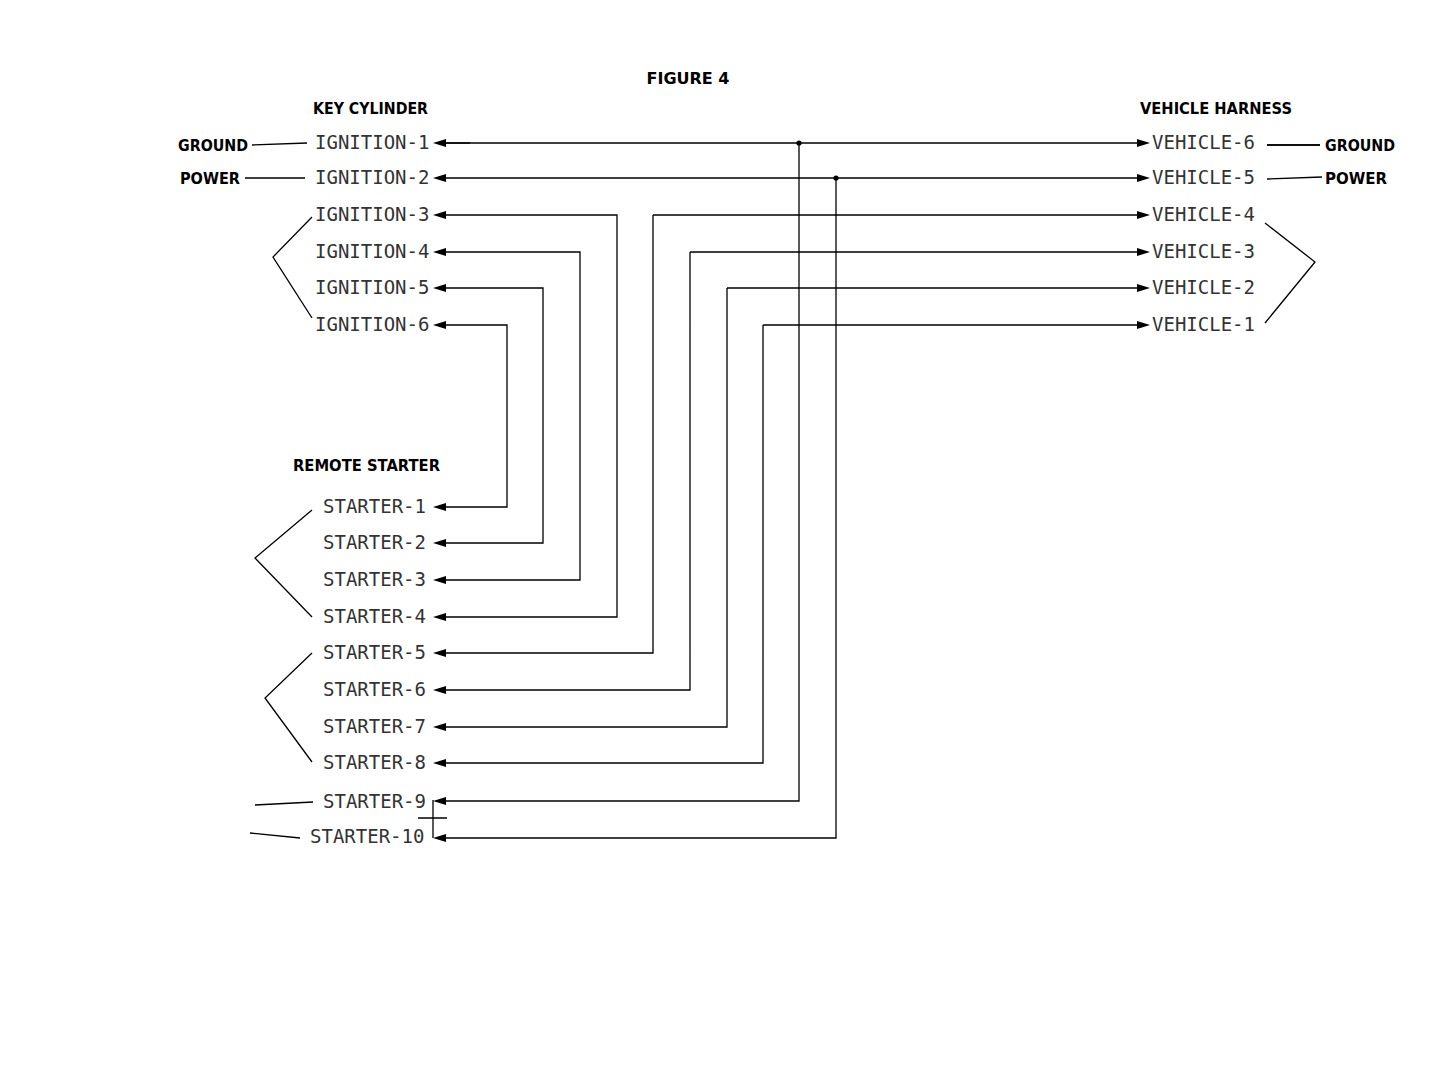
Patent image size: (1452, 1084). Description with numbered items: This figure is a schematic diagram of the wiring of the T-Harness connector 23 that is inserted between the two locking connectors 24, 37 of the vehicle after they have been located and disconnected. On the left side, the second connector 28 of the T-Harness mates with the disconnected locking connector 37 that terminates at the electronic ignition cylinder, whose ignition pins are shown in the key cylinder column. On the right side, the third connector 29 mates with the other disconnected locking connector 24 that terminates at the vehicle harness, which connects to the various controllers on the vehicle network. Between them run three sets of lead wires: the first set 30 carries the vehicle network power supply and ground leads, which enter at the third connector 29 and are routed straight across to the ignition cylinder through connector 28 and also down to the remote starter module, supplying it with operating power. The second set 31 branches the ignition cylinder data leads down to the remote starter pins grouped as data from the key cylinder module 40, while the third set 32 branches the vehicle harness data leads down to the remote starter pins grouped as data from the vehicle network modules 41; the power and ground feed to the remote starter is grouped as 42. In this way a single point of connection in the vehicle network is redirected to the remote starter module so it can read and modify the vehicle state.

The T-Harness connector 23 is at (880, 392).
The locking connector 24 is at (1220, 346).
The second connector 28 is at (438, 150).
The third connector 29 is at (1126, 326).
The first set of lead wires 30 is at (610, 138).
The second set of lead wires 31 is at (490, 437).
The third set of lead wires 32 is at (772, 592).
The locking connector 37 is at (331, 334).
The data from key cylinder module 40 is at (176, 544).
The data from vehicle network modules 41 is at (179, 680).
The power and ground connections 42 is at (205, 819).